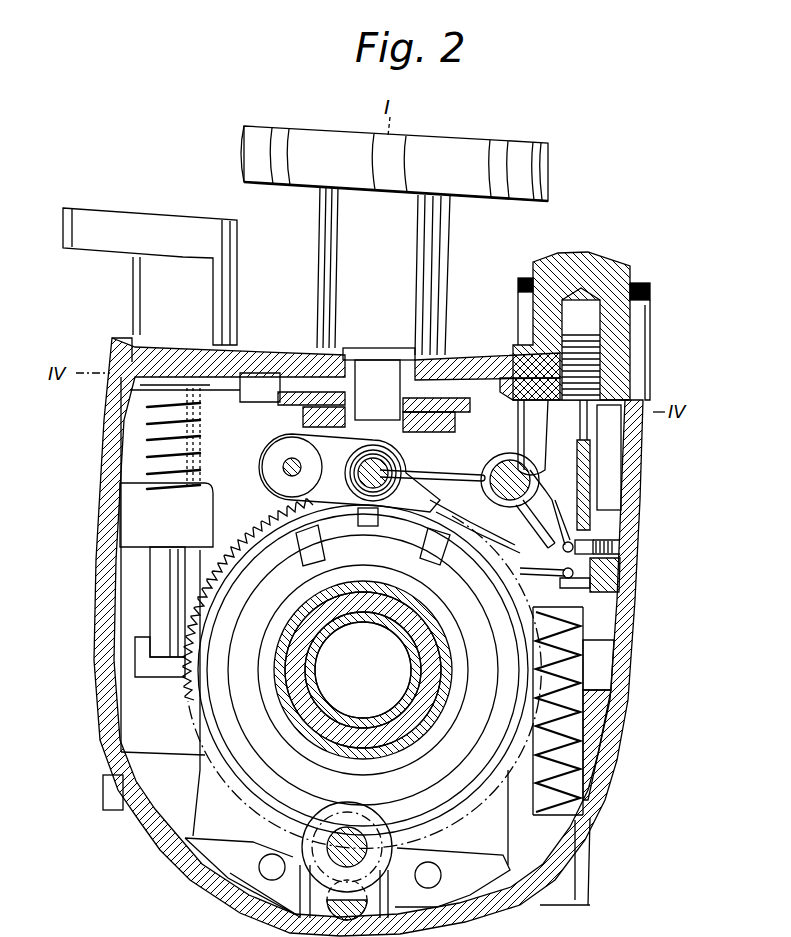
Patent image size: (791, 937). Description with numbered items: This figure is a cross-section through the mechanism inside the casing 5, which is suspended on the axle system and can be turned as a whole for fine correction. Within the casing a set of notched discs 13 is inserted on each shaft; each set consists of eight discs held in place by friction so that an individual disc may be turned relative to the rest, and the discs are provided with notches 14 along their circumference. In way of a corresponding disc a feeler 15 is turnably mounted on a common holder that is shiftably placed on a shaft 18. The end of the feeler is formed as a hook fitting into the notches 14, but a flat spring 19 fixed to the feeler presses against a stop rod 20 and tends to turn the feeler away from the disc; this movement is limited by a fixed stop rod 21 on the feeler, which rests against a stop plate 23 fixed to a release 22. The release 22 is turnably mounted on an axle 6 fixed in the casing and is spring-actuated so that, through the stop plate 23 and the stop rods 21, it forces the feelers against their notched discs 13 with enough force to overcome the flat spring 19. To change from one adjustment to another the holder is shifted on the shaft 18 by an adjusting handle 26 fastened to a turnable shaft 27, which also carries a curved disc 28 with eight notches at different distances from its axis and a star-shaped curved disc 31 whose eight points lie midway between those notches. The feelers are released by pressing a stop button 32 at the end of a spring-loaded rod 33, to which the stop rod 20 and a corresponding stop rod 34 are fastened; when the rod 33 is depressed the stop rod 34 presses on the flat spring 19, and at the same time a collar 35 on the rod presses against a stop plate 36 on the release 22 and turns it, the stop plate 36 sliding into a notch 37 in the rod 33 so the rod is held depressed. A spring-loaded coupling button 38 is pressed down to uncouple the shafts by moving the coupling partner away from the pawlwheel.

The casing 5 is at (100, 614).
The axle 6 is at (505, 502).
The notched discs 13 is at (245, 700).
The notches 14 is at (282, 545).
The feeler 15 is at (460, 516).
The shaft 18 is at (363, 463).
The flat spring 19 is at (612, 575).
The stop rod 20 is at (553, 572).
The stop rod 21 is at (426, 487).
The release 22 is at (520, 433).
The stop plate 23 is at (445, 478).
The adjusting handle 26 is at (268, 140).
The turnable shaft 27 is at (376, 388).
The curved disc 28 is at (305, 423).
The star-shaped curved disc 31 is at (443, 379).
The stop button 32 is at (633, 280).
The spring-loaded rod 33 is at (642, 412).
The stop rod 34 is at (612, 546).
The collar 35 is at (545, 557).
The stop plate 36 is at (545, 500).
The notch 37 is at (582, 440).
The coupling button 38 is at (176, 226).